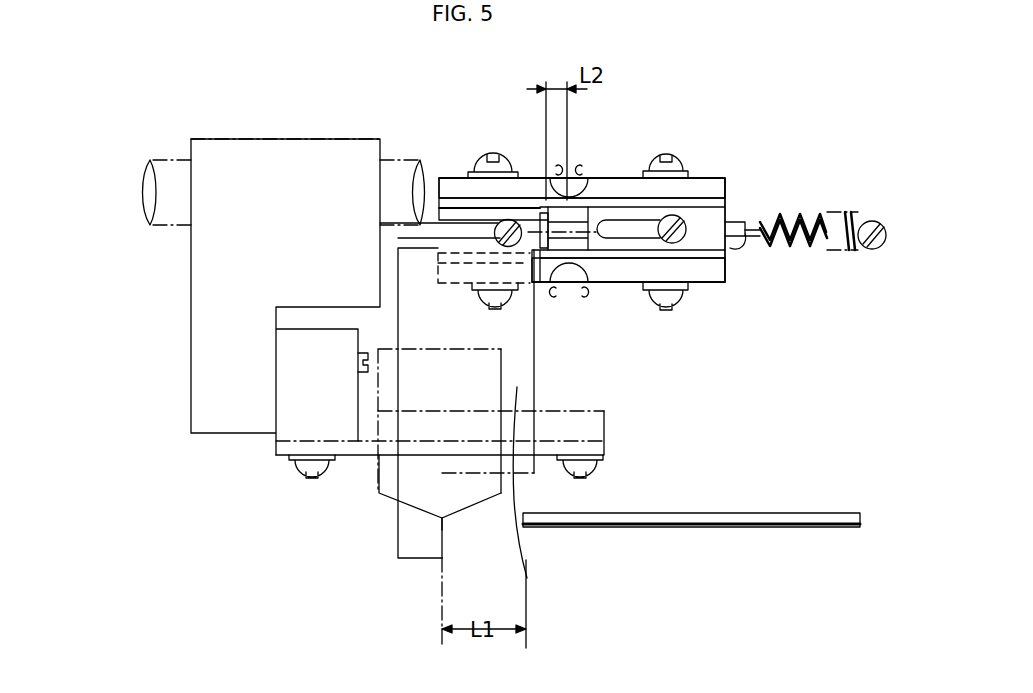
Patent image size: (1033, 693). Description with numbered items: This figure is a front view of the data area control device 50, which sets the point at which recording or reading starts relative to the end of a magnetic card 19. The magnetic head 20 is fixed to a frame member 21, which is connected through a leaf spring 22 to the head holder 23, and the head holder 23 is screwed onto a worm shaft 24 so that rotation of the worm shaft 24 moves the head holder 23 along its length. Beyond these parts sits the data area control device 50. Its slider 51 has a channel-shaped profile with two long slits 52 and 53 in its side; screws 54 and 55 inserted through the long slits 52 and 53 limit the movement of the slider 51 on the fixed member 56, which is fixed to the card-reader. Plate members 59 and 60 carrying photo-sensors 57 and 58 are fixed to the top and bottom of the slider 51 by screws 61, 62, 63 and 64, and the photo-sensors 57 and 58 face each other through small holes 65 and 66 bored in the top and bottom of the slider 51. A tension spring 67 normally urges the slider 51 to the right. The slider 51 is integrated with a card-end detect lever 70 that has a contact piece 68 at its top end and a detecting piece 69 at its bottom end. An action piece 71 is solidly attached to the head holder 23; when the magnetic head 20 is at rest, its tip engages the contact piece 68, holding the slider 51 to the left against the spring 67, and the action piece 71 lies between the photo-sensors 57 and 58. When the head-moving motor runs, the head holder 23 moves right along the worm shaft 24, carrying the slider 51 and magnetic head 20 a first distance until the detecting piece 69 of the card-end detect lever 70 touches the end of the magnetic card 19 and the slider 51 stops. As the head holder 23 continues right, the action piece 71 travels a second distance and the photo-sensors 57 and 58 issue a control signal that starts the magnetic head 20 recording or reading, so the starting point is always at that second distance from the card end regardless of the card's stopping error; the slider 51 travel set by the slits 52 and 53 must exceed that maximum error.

The magnetic card 19 is at (794, 513).
The magnetic head 20 is at (389, 482).
The frame member 21 is at (575, 422).
The leaf spring 22 is at (607, 444).
The head holder 23 is at (220, 382).
The worm shaft 24 is at (174, 158).
The data area control device 50 is at (623, 165).
The slider 51 is at (697, 220).
The long slit 52 is at (632, 230).
The long slit 53 is at (466, 216).
The screw 54 is at (684, 240).
The screw 55 is at (514, 247).
The fixed member 56 is at (778, 395).
The photo-sensor 57 is at (563, 186).
The photo-sensor 58 is at (600, 262).
The plate member 59 is at (525, 192).
The plate member 60 is at (633, 283).
The screw 61 is at (665, 166).
The screw 62 is at (488, 166).
The screw 63 is at (672, 292).
The screw 64 is at (508, 298).
The small hole 65 is at (597, 178).
The small hole 66 is at (575, 264).
The tension spring 67 is at (798, 214).
The contact piece 68 is at (546, 174).
The detecting piece 69 is at (442, 532).
The card-end detect lever 70 is at (532, 430).
The action piece 71 is at (605, 256).